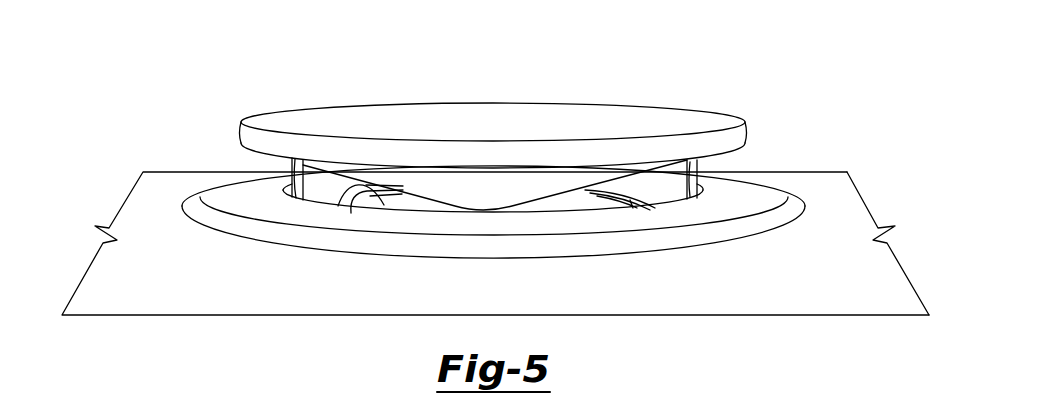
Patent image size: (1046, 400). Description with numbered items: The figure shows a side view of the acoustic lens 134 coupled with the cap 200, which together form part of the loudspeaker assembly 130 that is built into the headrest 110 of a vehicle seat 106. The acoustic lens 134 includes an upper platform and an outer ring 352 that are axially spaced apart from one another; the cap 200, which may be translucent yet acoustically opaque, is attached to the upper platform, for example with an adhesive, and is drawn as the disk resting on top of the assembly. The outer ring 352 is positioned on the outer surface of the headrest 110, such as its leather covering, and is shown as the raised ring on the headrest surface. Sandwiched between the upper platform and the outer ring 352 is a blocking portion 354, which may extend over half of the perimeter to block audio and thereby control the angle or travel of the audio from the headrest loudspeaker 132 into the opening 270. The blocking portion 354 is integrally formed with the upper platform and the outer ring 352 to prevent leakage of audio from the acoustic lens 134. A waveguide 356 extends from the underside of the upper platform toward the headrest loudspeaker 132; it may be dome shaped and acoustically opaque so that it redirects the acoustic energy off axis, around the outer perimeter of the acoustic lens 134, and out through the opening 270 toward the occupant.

The vehicle seat 106 is at (836, 296).
The headrest 110 is at (719, 295).
The loudspeaker assembly 130 is at (481, 203).
The headrest loudspeaker 132 is at (352, 185).
The acoustic lens 134 is at (667, 183).
The cap 200 is at (458, 102).
The opening 270 is at (615, 214).
The outer ring 352 is at (233, 200).
The blocking portion 354 is at (313, 180).
The waveguide 356 is at (438, 188).